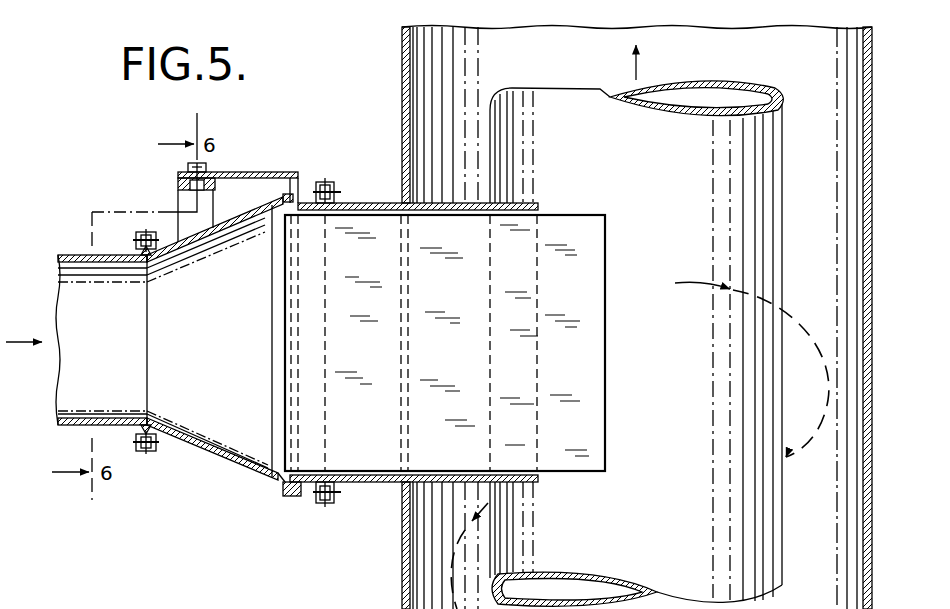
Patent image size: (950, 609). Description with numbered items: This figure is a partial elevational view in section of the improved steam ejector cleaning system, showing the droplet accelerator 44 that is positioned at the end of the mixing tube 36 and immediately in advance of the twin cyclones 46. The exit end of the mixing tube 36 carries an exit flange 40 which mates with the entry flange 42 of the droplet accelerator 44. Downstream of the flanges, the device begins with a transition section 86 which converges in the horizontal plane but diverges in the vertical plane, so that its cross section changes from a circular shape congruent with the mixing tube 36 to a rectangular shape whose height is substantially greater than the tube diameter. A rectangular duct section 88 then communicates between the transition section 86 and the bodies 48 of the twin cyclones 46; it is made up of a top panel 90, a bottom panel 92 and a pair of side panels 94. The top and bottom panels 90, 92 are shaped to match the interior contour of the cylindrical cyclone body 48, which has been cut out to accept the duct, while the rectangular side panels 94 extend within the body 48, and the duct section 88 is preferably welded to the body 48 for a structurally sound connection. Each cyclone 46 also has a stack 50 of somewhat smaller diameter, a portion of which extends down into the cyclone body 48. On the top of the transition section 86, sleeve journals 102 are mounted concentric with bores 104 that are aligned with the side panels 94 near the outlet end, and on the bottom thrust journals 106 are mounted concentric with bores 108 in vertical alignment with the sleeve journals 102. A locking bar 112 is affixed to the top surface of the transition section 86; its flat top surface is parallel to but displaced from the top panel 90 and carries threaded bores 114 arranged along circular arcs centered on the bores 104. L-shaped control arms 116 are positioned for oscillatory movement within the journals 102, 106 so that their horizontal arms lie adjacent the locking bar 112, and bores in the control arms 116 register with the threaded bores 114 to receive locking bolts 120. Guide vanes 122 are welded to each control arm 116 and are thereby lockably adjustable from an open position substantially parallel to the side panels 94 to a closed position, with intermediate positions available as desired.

The mixing tube 36 is at (67, 255).
The exit flange 40 is at (143, 452).
The entry flange 42 is at (148, 454).
The droplet accelerator 44 is at (215, 170).
The twin cyclones 46 is at (383, 580).
The cyclone body 48 is at (402, 68).
The cyclone stack 50 is at (559, 93).
The transition section 86 is at (213, 463).
The rectangular duct section 88 is at (368, 487).
The top panel 90 is at (365, 203).
The bottom panel 92 is at (353, 484).
The side panels 94 is at (272, 330).
The sleeve journals 102 is at (304, 192).
The bores 104 is at (274, 207).
The thrust journals 106 is at (300, 498).
The bores 108 is at (278, 473).
The locking bar 112 is at (185, 195).
The threaded bores 114 is at (205, 186).
The L-shaped control arms 116 is at (243, 172).
The locking bolts 120 is at (186, 166).
The guide vanes 122 is at (598, 363).